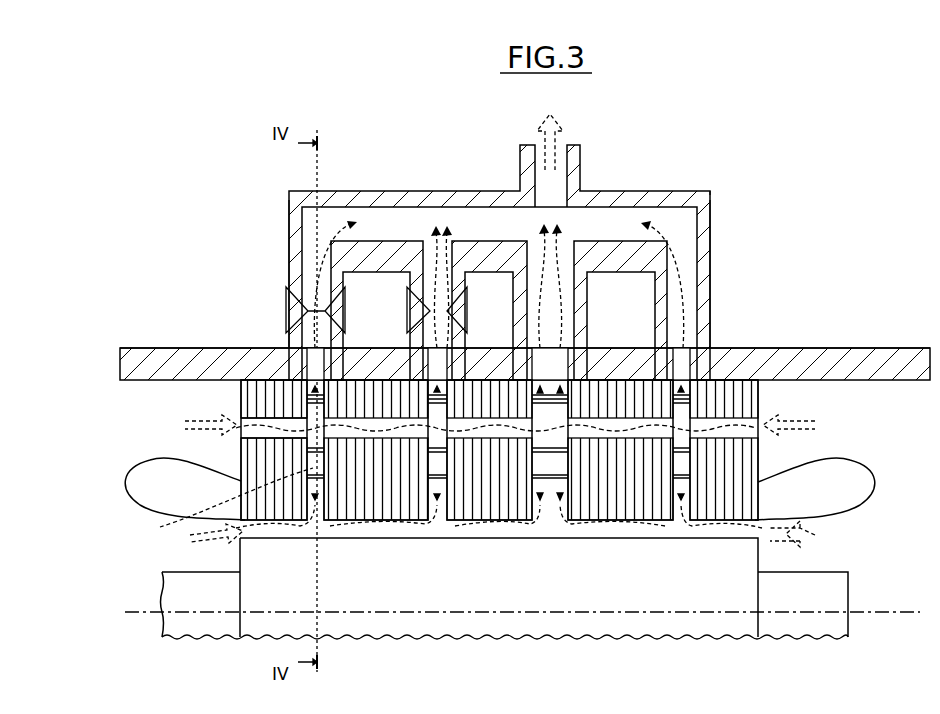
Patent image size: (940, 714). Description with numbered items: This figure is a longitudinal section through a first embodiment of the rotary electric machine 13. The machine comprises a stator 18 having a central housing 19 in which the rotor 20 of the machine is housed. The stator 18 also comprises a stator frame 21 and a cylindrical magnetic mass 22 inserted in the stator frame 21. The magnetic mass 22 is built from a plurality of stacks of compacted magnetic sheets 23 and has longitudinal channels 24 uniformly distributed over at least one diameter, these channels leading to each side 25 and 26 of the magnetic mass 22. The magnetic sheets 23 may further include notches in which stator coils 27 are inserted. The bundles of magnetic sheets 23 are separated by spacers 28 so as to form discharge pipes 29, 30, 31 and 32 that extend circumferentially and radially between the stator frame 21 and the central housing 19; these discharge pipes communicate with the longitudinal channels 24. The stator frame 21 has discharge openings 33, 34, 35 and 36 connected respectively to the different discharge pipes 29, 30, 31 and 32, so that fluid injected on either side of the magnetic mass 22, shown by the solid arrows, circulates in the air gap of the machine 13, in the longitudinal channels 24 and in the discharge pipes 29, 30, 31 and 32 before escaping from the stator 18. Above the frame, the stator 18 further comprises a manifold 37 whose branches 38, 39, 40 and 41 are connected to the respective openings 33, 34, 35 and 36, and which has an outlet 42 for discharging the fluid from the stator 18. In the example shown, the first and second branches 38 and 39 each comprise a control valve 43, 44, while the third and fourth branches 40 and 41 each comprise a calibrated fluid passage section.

The rotary electric machine 13 is at (773, 192).
The stator 18 is at (826, 342).
The central housing 19 is at (160, 590).
The rotor 20 is at (720, 596).
The stator frame 21 is at (903, 362).
The cylindrical magnetic mass 22 is at (758, 398).
The magnetic sheets 23 is at (241, 453).
The longitudinal channels 24 is at (241, 410).
The side of the magnetic mass 25 is at (122, 485).
The side of the magnetic mass 26 is at (816, 531).
The stator coils 27 is at (879, 478).
The spacers 28 is at (546, 482).
The discharge pipe 29 is at (223, 503).
The discharge pipe 30 is at (443, 462).
The discharge pipe 31 is at (563, 465).
The discharge pipe 32 is at (683, 440).
The discharge opening 33 is at (323, 367).
The discharge opening 34 is at (440, 368).
The discharge opening 35 is at (560, 368).
The discharge opening 36 is at (690, 366).
The manifold 37 is at (657, 187).
The first branch 38 is at (289, 275).
The second branch 39 is at (410, 289).
The third branch 40 is at (588, 290).
The fourth branch 41 is at (710, 257).
The outlet 42 is at (560, 158).
The control valve 43 is at (284, 311).
The control valve 44 is at (463, 307).